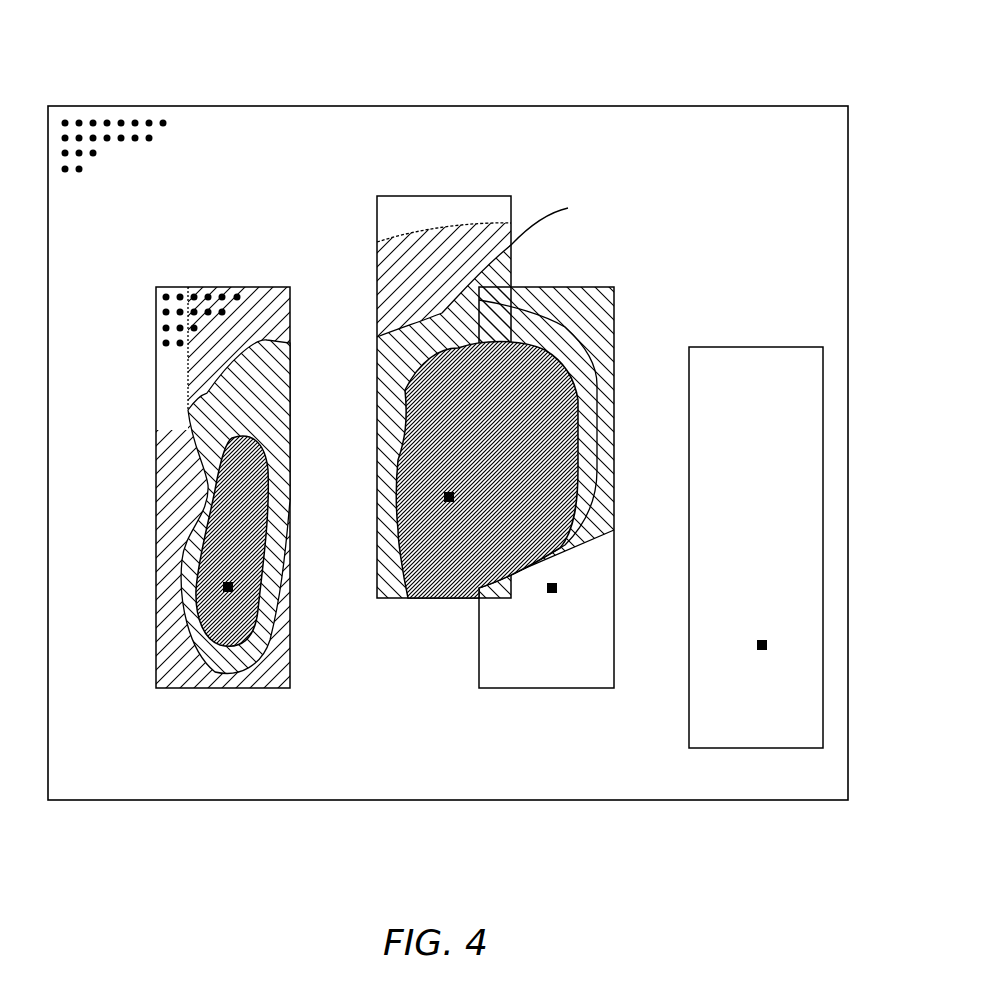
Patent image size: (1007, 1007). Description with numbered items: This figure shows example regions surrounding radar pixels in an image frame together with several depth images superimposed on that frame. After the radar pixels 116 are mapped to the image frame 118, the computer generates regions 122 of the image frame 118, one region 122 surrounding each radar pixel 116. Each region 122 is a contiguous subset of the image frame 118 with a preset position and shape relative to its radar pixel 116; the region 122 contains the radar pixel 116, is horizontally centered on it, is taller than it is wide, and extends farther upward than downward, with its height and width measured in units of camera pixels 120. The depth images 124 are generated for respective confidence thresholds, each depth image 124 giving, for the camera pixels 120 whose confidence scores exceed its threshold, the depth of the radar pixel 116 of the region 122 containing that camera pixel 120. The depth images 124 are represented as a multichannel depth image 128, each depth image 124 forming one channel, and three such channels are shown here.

The radar pixels 116 is at (230, 590).
The image frame 118 is at (650, 106).
The camera pixels 120 is at (93, 155).
The regions 122 is at (377, 223).
The depth images 124 is at (218, 510).
The multichannel depth image 128 is at (672, 186).